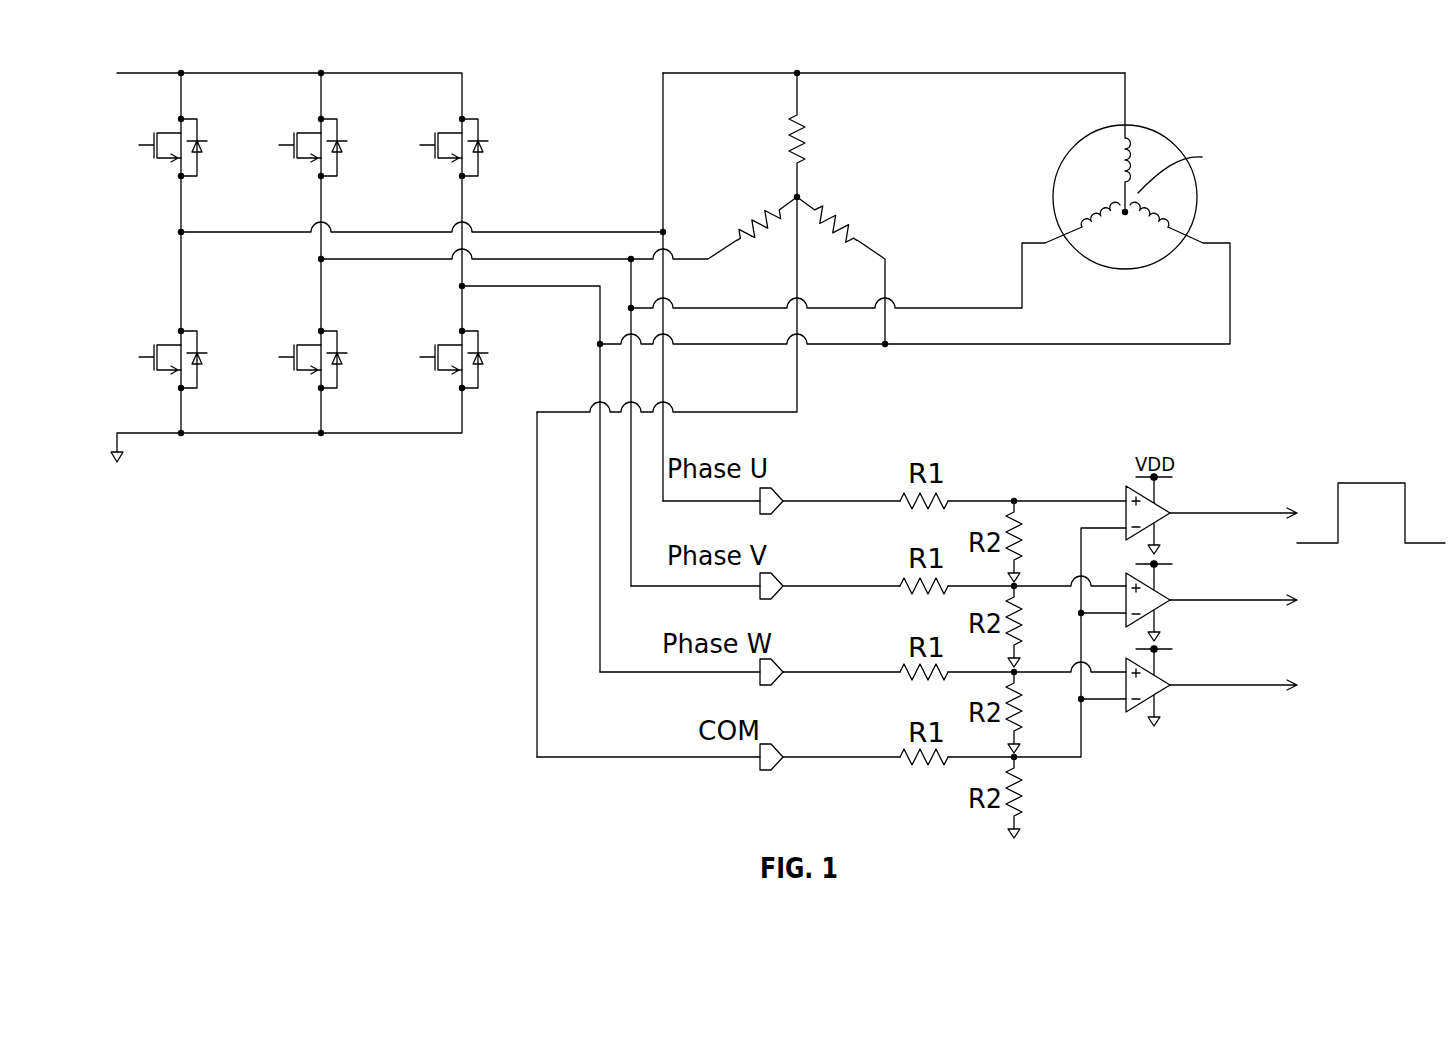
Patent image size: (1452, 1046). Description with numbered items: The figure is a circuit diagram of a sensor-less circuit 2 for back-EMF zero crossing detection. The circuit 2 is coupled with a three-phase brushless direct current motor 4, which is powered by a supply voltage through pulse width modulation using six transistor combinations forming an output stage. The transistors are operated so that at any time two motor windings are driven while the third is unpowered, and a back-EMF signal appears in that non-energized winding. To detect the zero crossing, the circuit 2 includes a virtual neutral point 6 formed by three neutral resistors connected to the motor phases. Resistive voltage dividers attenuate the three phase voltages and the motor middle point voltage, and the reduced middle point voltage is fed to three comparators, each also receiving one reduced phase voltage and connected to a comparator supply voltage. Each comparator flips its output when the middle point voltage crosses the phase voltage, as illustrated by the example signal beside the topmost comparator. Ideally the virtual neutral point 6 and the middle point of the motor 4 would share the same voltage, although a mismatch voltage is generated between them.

The sensor-less circuit 2 is at (352, 648).
The three-phase brushless direct current motor 4 is at (1155, 133).
The virtual neutral point 6 is at (797, 197).